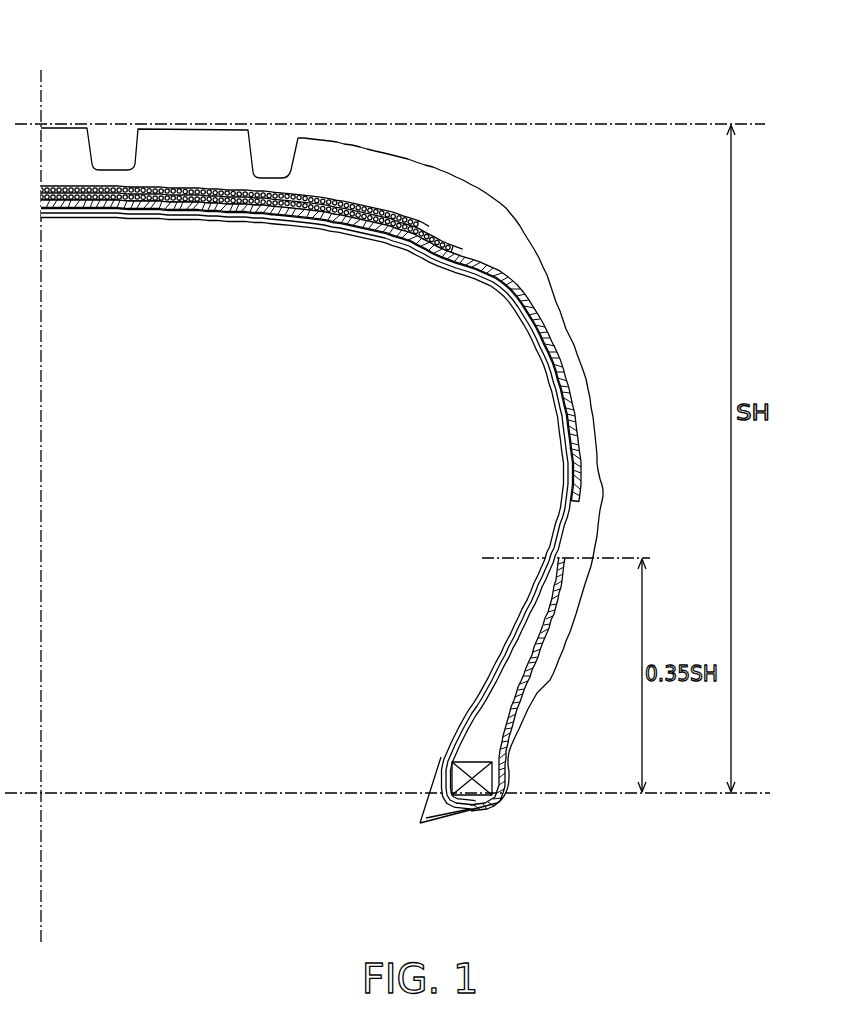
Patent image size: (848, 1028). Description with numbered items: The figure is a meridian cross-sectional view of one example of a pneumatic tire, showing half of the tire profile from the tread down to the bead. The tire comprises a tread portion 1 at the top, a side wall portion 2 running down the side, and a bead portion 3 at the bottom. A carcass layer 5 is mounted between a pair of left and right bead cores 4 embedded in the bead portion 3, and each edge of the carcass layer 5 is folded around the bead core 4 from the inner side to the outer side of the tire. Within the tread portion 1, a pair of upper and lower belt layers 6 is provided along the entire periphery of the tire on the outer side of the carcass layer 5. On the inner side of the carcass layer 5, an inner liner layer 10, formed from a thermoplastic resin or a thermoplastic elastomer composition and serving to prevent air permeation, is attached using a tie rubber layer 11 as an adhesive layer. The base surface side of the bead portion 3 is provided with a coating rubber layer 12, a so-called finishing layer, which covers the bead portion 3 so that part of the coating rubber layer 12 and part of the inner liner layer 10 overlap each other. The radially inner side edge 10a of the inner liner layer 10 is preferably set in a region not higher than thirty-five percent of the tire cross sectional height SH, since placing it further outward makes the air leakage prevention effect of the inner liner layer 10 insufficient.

The tread portion 1 is at (174, 118).
The side wall portion 2 is at (615, 526).
The bead portion 3 is at (512, 777).
The bead core 4 is at (507, 800).
The carcass layer 5 is at (570, 397).
The belt layer 6 is at (210, 216).
The inner liner layer 10 is at (560, 443).
The inner side edge 10a is at (430, 775).
The tie rubber layer 11 is at (560, 518).
The coating rubber layer 12 is at (467, 817).